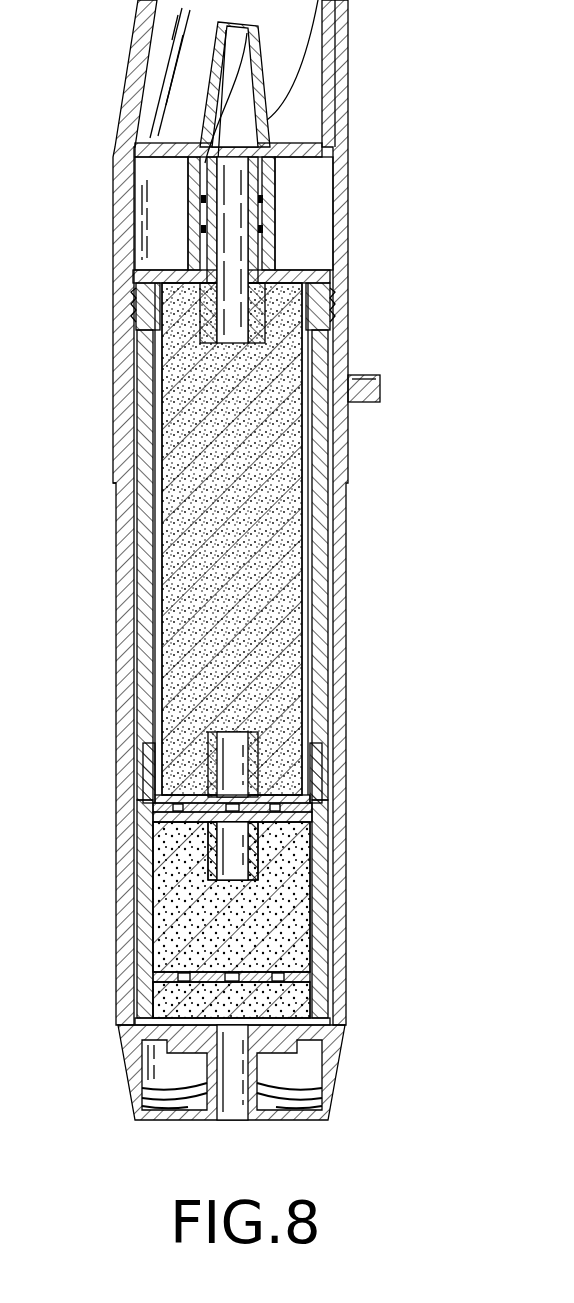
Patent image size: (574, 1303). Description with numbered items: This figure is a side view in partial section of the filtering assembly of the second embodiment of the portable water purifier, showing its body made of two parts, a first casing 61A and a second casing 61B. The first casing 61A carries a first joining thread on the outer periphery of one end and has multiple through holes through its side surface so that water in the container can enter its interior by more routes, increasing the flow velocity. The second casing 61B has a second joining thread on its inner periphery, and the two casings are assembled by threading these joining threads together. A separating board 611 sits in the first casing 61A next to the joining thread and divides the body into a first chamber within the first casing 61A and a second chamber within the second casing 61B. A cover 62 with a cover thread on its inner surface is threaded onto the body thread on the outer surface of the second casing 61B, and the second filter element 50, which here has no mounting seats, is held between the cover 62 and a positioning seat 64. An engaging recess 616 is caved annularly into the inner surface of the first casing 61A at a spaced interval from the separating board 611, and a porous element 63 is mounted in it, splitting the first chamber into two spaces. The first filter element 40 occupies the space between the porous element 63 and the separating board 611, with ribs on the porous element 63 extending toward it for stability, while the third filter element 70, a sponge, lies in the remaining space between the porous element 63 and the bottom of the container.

The first filter element 40 is at (170, 855).
The second filter element 50 is at (180, 541).
The cover 62 is at (310, 260).
The first casing 61A is at (320, 893).
The second casing 61B is at (320, 553).
The separating board 611 is at (284, 815).
The engaging recess 616 is at (311, 980).
The porous element 63 is at (176, 975).
The positioning seat 64 is at (210, 741).
The third filter element 70 is at (166, 998).